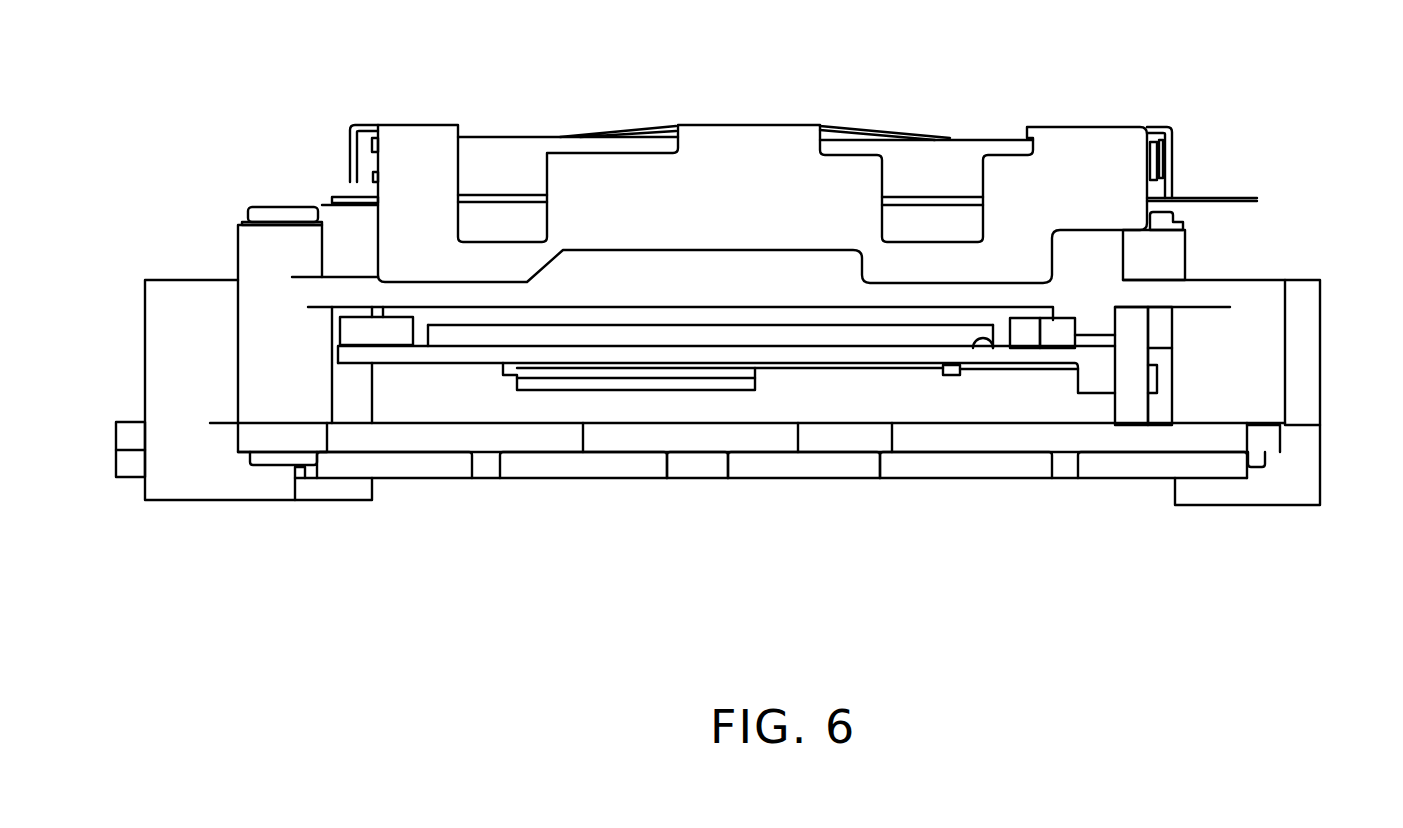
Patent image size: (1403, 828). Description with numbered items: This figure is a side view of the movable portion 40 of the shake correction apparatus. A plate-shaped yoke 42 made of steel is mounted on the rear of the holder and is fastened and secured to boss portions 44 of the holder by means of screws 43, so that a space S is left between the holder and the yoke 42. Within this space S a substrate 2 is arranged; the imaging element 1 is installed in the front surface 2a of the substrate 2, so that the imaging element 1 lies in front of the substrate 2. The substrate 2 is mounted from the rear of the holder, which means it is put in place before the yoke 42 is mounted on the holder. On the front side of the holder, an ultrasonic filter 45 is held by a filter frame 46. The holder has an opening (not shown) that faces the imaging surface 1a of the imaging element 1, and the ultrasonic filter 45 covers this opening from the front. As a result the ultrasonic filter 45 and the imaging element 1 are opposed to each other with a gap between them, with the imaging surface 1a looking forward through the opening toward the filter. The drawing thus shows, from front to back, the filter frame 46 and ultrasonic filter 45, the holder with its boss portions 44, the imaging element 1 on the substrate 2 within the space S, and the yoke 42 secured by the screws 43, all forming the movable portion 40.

The movable portion 40 is at (1224, 579).
The ultrasonic filter 45 is at (962, 138).
The filter frame 46 is at (1097, 150).
The boss portions 44 is at (255, 347).
The screws 43 is at (265, 467).
The yoke 42 is at (550, 443).
The imaging element 1 is at (920, 338).
The imaging surface 1a is at (621, 323).
The substrate 2 is at (847, 363).
The front surface 2a is at (985, 348).
The space S is at (418, 402).